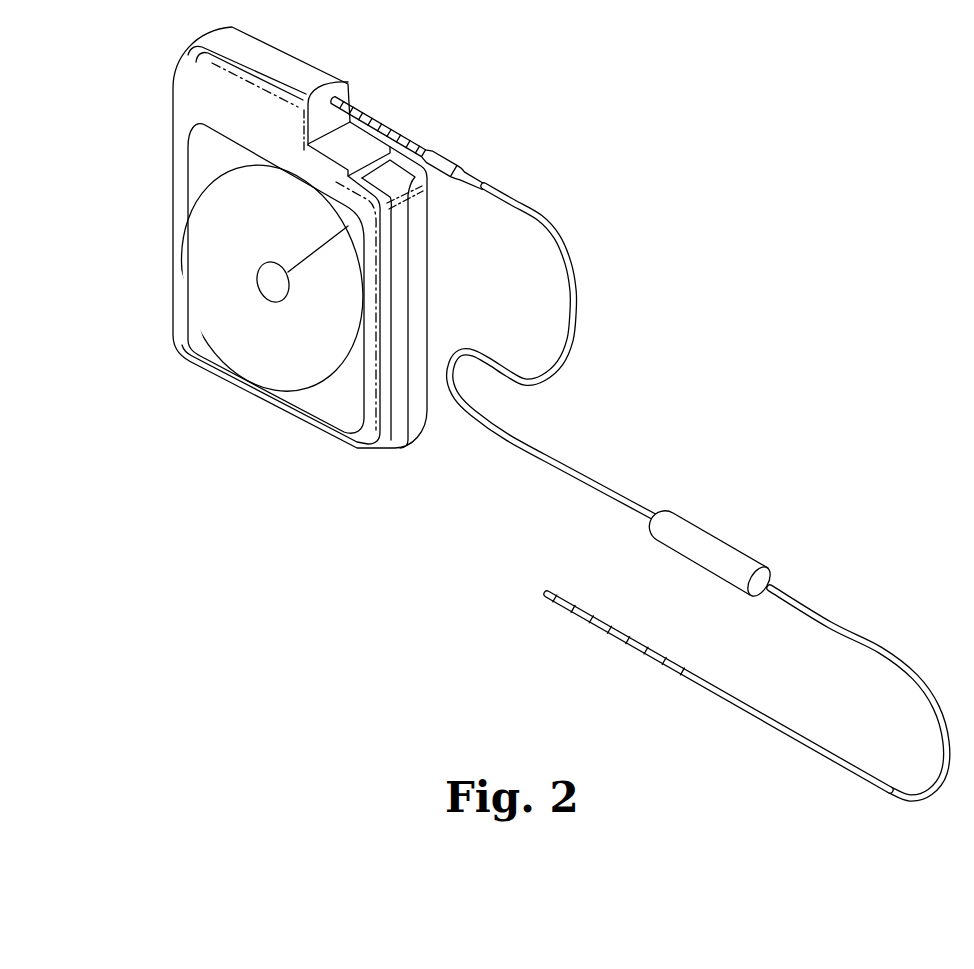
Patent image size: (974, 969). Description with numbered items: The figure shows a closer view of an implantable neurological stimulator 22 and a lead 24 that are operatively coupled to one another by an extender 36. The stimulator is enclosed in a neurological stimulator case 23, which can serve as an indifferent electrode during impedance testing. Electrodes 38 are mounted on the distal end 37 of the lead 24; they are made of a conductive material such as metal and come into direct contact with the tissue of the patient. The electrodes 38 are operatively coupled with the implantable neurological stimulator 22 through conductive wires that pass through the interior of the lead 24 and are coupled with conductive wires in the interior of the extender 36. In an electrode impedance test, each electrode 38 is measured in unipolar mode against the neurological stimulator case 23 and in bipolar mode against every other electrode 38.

The implantable neurological stimulator 22 is at (467, 118).
The neurological stimulator case 23 is at (270, 407).
The lead 24 is at (892, 650).
The extender 36 is at (577, 470).
The distal end 37 is at (824, 797).
The electrodes 38 is at (673, 680).